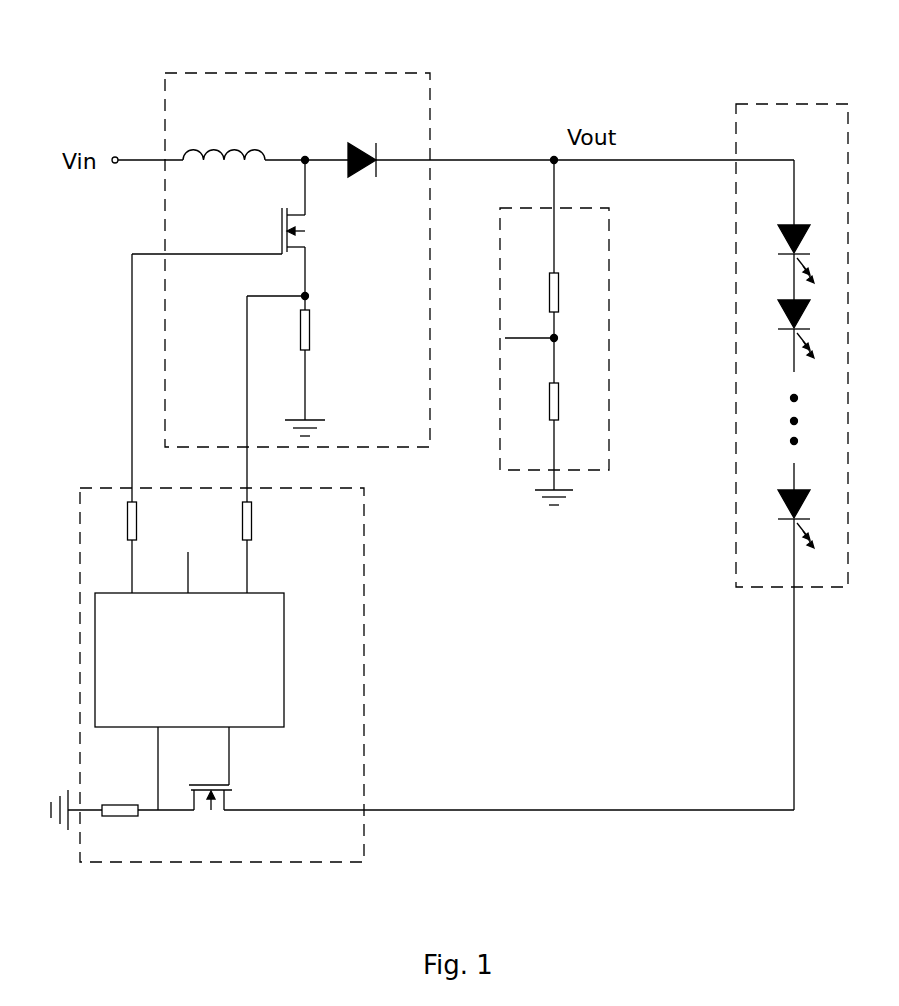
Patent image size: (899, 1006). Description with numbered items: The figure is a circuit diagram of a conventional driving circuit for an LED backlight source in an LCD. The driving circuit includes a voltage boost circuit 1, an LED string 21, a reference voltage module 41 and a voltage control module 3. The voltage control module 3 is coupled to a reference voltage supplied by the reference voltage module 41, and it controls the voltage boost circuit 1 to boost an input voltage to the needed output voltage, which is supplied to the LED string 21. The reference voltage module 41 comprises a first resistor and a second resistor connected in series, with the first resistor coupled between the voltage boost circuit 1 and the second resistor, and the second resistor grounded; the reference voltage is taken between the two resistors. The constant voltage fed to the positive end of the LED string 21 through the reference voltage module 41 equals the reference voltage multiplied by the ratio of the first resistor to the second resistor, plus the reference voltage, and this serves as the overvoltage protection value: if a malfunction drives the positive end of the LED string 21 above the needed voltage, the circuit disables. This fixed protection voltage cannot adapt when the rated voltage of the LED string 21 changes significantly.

The voltage boost circuit 1 is at (430, 73).
The LED string 21 is at (755, 104).
The voltage control module 3 is at (364, 700).
The reference voltage module 41 is at (537, 470).